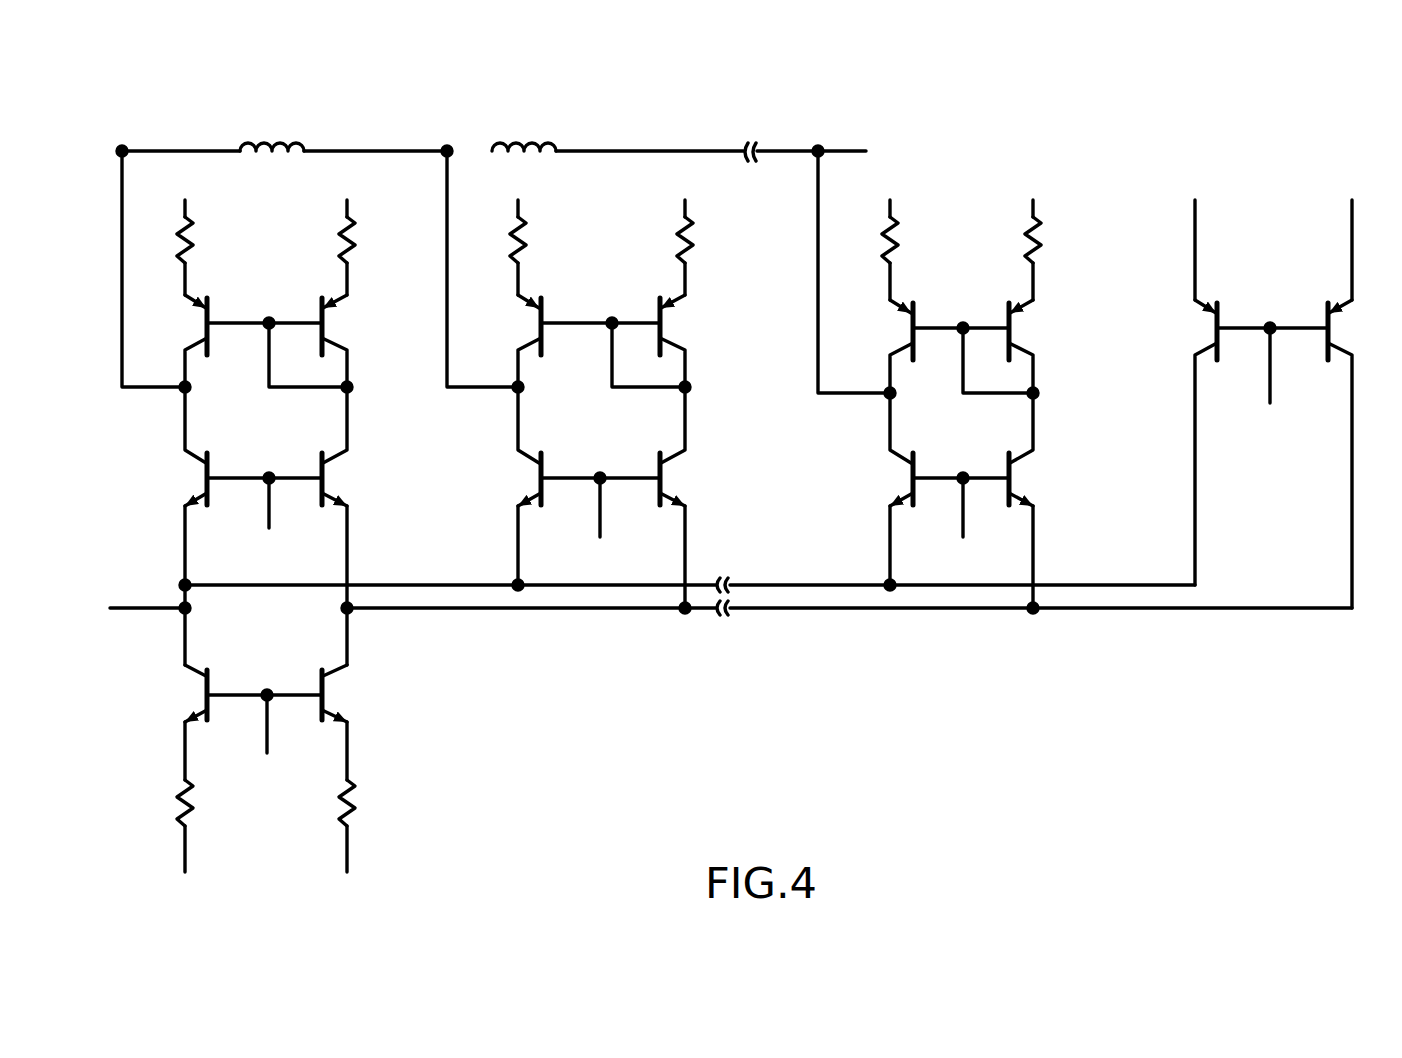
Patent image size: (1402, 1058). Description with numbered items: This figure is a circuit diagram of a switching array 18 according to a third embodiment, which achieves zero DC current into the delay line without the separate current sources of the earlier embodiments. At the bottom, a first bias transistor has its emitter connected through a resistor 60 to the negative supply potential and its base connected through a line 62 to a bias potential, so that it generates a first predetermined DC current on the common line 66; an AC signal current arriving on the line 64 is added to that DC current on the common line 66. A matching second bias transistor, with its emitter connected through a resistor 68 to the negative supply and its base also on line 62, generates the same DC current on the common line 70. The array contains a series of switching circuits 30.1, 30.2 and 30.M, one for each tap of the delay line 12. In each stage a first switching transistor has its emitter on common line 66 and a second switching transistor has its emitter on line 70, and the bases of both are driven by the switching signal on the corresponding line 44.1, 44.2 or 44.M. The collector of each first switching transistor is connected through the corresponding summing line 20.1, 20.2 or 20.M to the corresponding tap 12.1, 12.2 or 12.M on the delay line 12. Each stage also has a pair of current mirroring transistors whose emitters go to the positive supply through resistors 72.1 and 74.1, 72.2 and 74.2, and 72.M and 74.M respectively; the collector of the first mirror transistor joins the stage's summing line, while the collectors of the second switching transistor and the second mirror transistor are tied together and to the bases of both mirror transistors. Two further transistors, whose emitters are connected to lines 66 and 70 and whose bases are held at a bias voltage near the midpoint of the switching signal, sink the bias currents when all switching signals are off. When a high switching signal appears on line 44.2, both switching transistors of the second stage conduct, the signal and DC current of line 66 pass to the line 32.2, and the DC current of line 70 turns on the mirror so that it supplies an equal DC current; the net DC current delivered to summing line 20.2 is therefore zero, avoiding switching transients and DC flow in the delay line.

The delay line 12 is at (640, 150).
The delay line tap 12.1 is at (123, 148).
The delay line tap 12.2 is at (447, 148).
The delay line tap 12.M is at (818, 148).
The switching array 18 is at (724, 507).
The summing line 20.1 is at (121, 218).
The summing line 20.2 is at (447, 214).
The summing line 20.M is at (818, 213).
The switching circuit 30.1 is at (269, 279).
The switching circuit 30.2 is at (606, 279).
The switching circuit 30.M is at (973, 266).
The line 32.2 is at (518, 428).
The switching signal line 44.1 is at (265, 506).
The switching signal line 44.2 is at (598, 506).
The switching signal line 44.M is at (960, 505).
The resistor 60 is at (172, 793).
The line 62 is at (264, 737).
The line 64 is at (137, 607).
The common line 66 is at (270, 588).
The resistor 68 is at (357, 798).
The common line 70 is at (422, 611).
The resistor 72.1 is at (192, 237).
The resistor 72.2 is at (529, 252).
The resistor 72.M is at (901, 252).
The resistor 74.1 is at (355, 254).
The resistor 74.2 is at (694, 252).
The resistor 74.M is at (1045, 258).